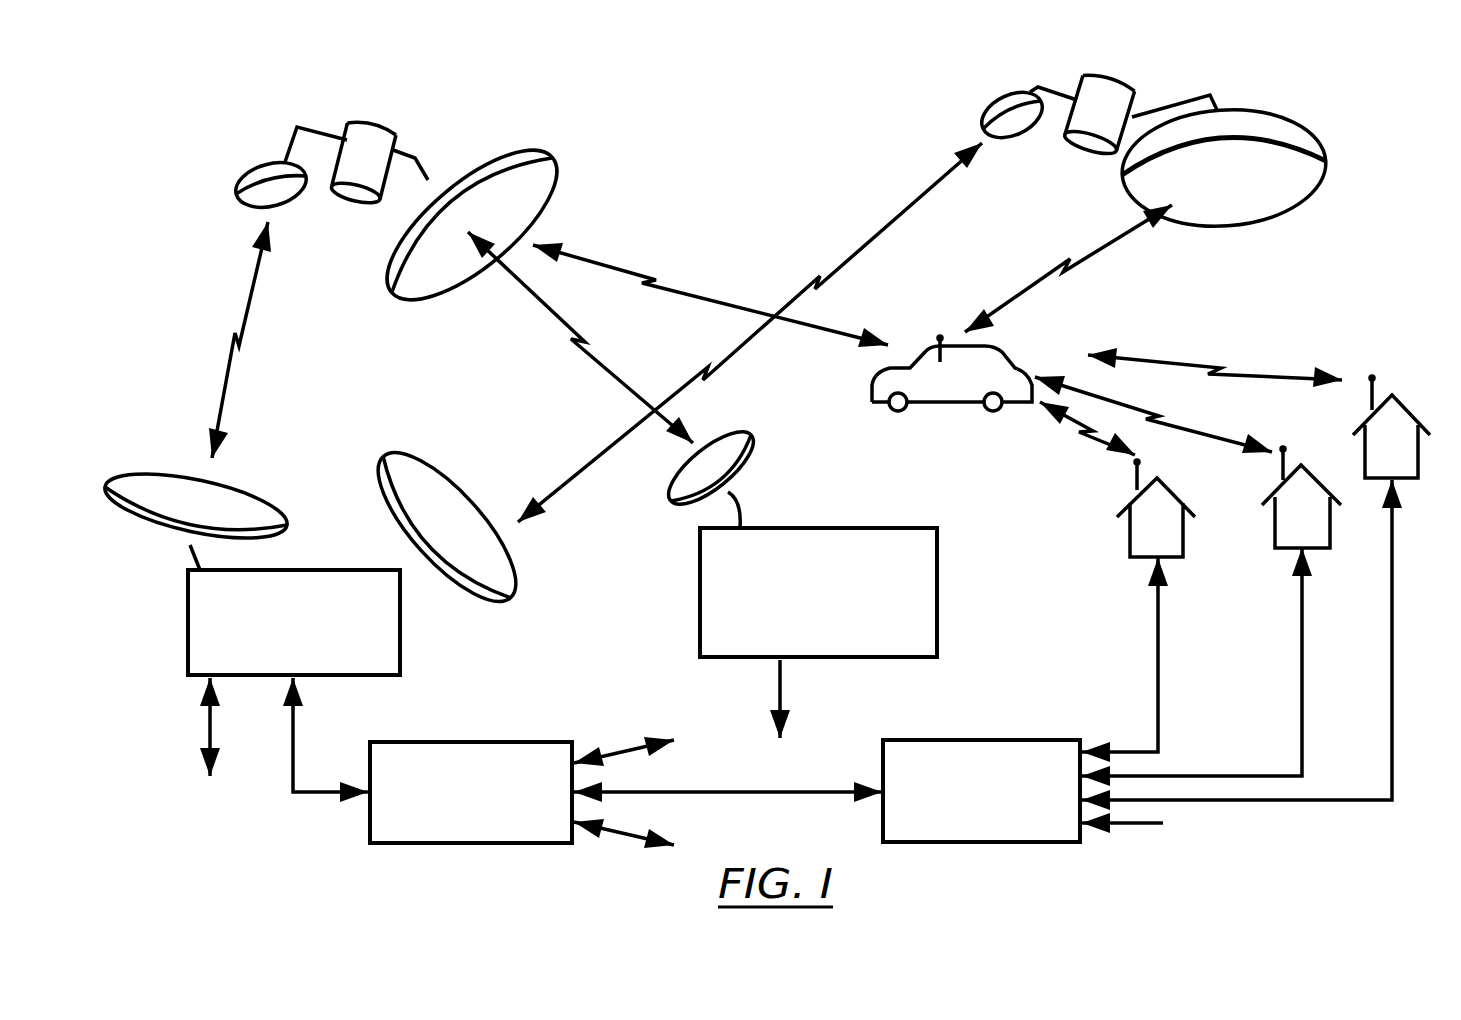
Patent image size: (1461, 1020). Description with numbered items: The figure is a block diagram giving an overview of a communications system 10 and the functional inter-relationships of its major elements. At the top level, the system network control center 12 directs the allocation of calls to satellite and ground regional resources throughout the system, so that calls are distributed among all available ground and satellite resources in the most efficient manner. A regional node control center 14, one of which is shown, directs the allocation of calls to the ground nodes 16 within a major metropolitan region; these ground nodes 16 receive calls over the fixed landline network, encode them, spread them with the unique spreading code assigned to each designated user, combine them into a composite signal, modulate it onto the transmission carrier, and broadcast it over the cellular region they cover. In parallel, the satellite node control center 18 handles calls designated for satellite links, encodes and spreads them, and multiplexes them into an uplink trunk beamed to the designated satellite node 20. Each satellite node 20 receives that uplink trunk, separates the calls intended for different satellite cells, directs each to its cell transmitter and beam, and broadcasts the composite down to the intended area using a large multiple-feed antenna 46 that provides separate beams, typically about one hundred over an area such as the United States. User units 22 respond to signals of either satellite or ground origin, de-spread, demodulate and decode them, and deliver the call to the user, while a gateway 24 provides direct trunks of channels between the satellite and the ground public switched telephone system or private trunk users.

The communications system 10 is at (1250, 75).
The system network control center 12 is at (516, 741).
The regional node control center 14 is at (1028, 740).
The ground node 16 is at (1128, 545).
The satellite node control center 18 is at (403, 652).
The satellite node 20 is at (388, 130).
The user unit 22 is at (940, 406).
The gateway 24 is at (940, 600).
The multiple feed antenna 46 is at (483, 155).